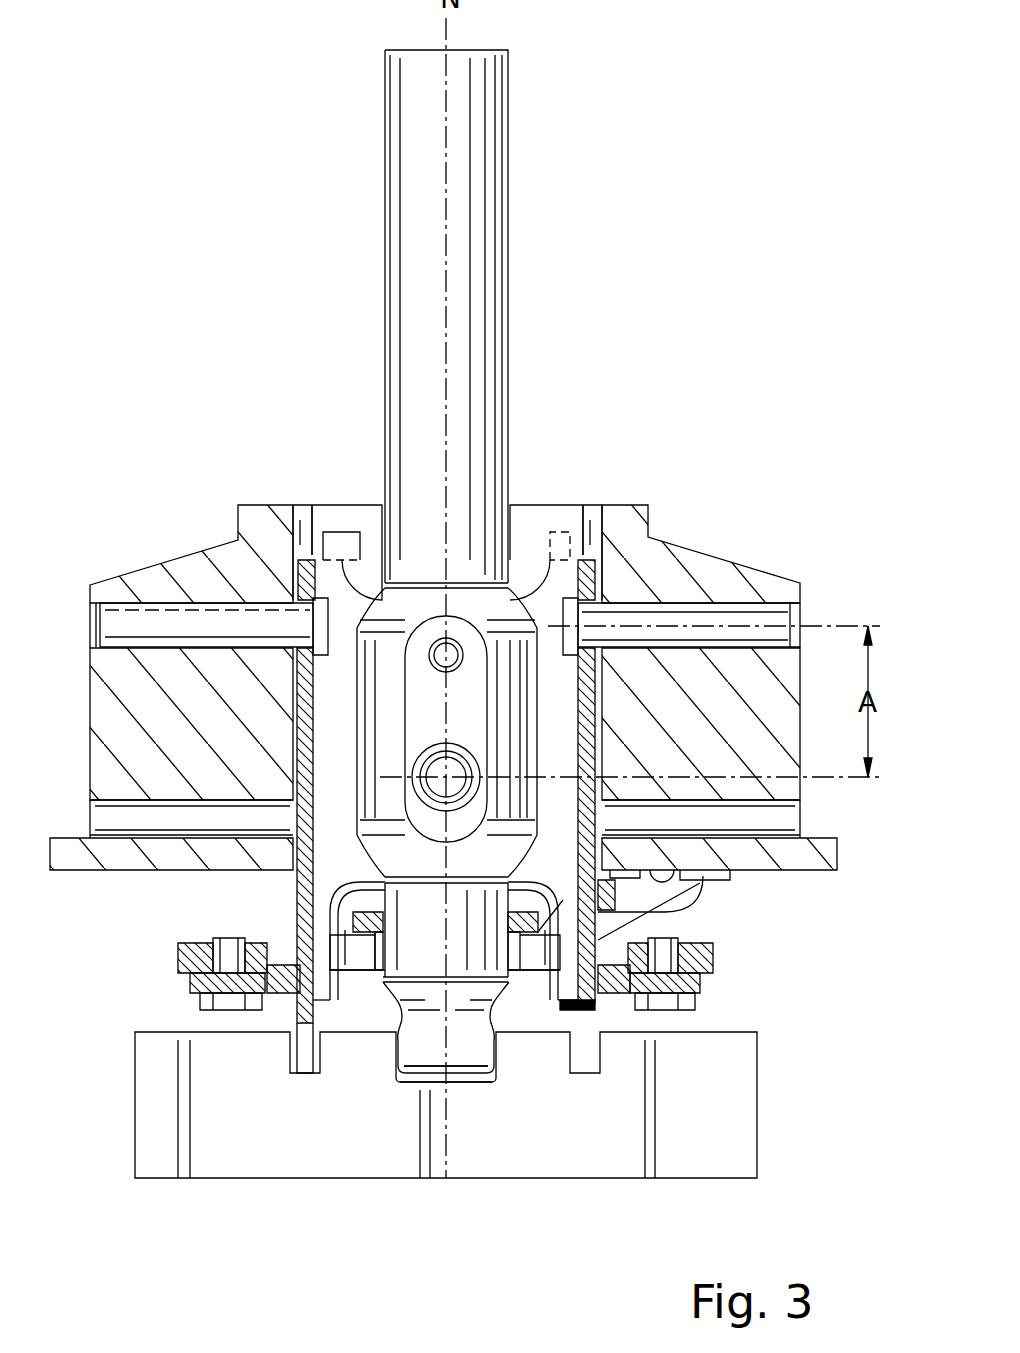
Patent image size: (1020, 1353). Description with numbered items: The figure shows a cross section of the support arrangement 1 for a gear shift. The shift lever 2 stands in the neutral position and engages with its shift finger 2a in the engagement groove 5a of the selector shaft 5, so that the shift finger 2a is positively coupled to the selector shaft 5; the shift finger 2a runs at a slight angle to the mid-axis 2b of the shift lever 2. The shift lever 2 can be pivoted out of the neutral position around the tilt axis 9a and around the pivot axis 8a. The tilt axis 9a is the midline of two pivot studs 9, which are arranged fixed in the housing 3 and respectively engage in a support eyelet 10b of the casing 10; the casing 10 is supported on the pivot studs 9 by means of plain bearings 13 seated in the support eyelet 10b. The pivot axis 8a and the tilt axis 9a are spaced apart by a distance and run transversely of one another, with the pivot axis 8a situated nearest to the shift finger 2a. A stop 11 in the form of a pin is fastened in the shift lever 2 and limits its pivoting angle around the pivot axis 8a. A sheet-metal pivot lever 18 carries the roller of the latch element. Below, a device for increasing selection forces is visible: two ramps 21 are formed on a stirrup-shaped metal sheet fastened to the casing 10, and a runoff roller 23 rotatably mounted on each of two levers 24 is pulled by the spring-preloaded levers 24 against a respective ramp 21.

The support arrangement 1 is at (672, 304).
The shift lever 2 is at (493, 258).
The shift finger 2a is at (458, 1078).
The mid-axis 2b is at (446, 178).
The housing 3 is at (665, 553).
The selector shaft 5 is at (720, 1155).
The engagement groove 5a is at (405, 1090).
The pivot axis 8a is at (443, 775).
The pivot studs 9 is at (160, 615).
The tilt axis 9a is at (834, 615).
The casing 10 is at (300, 905).
The support eyelet 10b is at (303, 558).
The stop 11 is at (452, 665).
The plain bearings 13 is at (318, 580).
The pivot lever 18 is at (355, 955).
The ramps 21 is at (278, 983).
The runoff roller 23 is at (195, 992).
The levers 24 is at (178, 960).